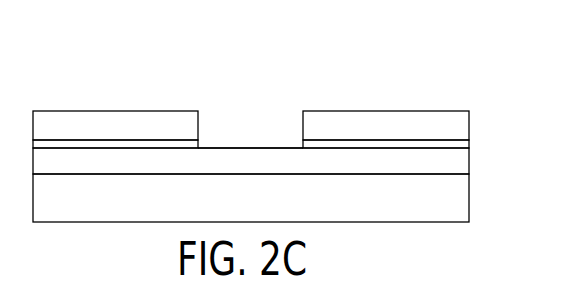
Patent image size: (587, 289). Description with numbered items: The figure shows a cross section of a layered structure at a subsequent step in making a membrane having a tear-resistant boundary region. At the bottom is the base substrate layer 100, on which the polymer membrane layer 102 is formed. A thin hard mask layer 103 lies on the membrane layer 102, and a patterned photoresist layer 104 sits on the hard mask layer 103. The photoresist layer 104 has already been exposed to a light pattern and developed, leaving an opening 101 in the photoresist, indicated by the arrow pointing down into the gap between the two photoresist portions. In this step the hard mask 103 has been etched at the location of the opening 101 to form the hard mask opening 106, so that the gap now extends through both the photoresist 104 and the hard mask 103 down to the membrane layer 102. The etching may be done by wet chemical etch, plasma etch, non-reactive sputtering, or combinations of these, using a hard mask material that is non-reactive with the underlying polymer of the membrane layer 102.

The base substrate layer 100 is at (460, 201).
The opening 101 is at (255, 125).
The membrane layer 102 is at (460, 163).
The hard mask layer 103 is at (470, 146).
The photoresist layer 104 is at (450, 128).
The hard mask opening 106 is at (229, 142).